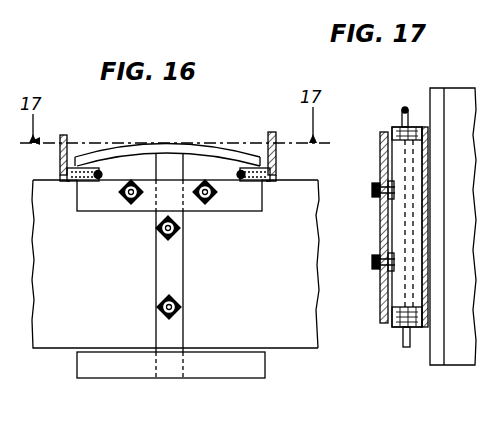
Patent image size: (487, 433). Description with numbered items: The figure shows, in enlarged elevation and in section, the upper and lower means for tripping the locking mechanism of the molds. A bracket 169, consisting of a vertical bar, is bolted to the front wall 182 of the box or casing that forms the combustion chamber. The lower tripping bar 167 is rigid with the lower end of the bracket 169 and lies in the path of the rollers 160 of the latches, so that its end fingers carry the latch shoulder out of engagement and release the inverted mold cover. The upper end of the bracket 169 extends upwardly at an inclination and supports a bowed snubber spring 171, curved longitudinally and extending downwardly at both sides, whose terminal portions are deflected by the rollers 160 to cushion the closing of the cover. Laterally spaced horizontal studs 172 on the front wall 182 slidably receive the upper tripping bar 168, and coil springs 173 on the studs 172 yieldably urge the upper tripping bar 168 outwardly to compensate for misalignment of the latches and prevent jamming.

In FIG. 16, the roller 160 is at (68, 180).
In FIG. 17, the roller 160 is at (400, 126).
In FIG. 16, the lower tripping bar 167 is at (210, 364).
In FIG. 16, the upper tripping bar 168 is at (153, 203).
In FIG. 16, the bracket 169 is at (178, 284).
In FIG. 17, the bracket 169 is at (405, 220).
In FIG. 16, the snubber spring 171 is at (160, 151).
In FIG. 17, the snubber spring 171 is at (408, 228).
In FIG. 16, the stud 172 is at (120, 204).
In FIG. 17, the stud 172 is at (378, 190).
In FIG. 16, the coil spring 173 is at (168, 156).
In FIG. 17, the coil spring 173 is at (382, 157).
In FIG. 16, the front wall 182 is at (122, 310).